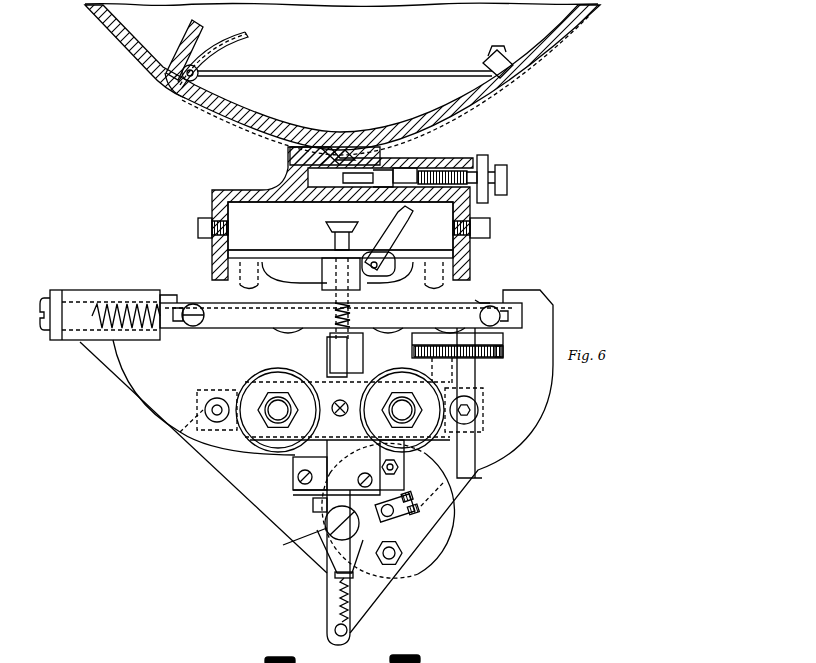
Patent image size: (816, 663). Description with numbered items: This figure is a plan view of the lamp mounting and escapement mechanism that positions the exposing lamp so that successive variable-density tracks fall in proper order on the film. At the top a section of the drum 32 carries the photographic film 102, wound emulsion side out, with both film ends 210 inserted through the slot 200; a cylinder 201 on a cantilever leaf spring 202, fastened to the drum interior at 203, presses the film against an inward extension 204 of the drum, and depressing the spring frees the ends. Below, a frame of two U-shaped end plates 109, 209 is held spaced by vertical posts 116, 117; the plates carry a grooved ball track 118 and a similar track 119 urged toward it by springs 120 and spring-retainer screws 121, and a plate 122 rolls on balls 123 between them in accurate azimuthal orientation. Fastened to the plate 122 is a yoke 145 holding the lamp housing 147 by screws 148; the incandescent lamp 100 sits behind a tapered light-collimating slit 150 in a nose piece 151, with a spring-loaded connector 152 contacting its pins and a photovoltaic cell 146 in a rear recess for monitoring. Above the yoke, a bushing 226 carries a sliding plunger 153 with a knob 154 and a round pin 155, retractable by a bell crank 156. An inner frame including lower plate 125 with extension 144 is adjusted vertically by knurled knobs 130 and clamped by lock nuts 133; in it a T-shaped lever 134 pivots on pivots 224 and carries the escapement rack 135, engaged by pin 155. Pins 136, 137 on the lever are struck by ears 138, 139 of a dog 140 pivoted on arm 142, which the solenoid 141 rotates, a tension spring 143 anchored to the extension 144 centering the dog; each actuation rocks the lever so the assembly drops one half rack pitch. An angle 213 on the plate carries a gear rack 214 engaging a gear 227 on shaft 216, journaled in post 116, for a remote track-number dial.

The drum 32 is at (85, 10).
The photographic film 102 is at (105, 42).
The inward extension of the drum 204 is at (187, 30).
The ends of the film 210 is at (226, 36).
The slot 200 is at (160, 80).
The cylinder 201 is at (200, 72).
The cantilever leaf spring 202 is at (362, 72).
The spring fastening point 203 is at (502, 52).
The tapered nose piece 151 is at (297, 153).
The light-collimating slit 150 is at (360, 156).
The lamp housing 147 is at (257, 192).
The photovoltaic cell 146 is at (303, 239).
The yoke 145 is at (212, 258).
The exposing lamp 100 is at (350, 180).
The spring-loaded connector 152 is at (405, 185).
The screws 148 is at (198, 228).
The knob 154 is at (350, 226).
The bell crank 156 is at (410, 240).
The bushing 226 is at (328, 287).
The grooved ball track 118 is at (553, 305).
The plate 122 is at (480, 300).
The springs 120 is at (120, 290).
The spring-retainer screws 121 is at (42, 305).
The grooved ball track 119 is at (175, 300).
The balls 123 is at (185, 305).
The sliding plunger 153 is at (298, 312).
The upper end plate 209 is at (126, 382).
The lower end plate 109 is at (222, 473).
The vertical post 117 is at (182, 433).
The lower plate 125 is at (250, 446).
The knurled adjusting knob 130 is at (260, 375).
The pivots 224 is at (340, 418).
The escapement rack 135 is at (326, 345).
The round pin 155 is at (363, 350).
The angle 213 is at (438, 345).
The gear 227 is at (490, 355).
The gear rack 214 is at (475, 375).
The vertical post 116 is at (485, 415).
The shaft 216 is at (478, 480).
The solenoid 141 is at (457, 512).
The arm 142 is at (455, 530).
The T-shaped lever 134 is at (295, 465).
The vertical pin 136 is at (298, 478).
The vertical pin 137 is at (395, 478).
The ear 138 is at (315, 507).
The dog 140 is at (328, 548).
The ear 139 is at (390, 545).
The tension spring 143 is at (340, 600).
The frame extension 144 is at (395, 600).
The lock nuts 133 is at (385, 660).